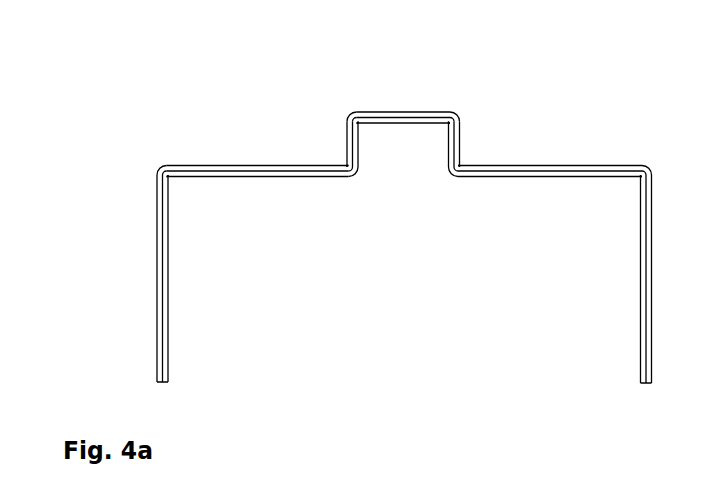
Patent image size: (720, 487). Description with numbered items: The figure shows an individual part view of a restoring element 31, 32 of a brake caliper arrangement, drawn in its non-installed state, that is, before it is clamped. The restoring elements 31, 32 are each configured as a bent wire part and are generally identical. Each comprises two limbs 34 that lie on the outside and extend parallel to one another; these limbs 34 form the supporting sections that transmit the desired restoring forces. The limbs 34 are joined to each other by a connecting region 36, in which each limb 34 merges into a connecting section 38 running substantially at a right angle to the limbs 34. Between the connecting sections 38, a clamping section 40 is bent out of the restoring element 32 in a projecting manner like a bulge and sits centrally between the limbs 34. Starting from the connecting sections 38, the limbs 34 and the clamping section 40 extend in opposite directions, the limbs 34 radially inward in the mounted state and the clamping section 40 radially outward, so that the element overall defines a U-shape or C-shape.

The restoring element 31 is at (145, 118).
The restoring element 32 is at (360, 197).
The limbs 34 is at (158, 228).
The connecting region 36 is at (297, 88).
The connecting section 38 is at (257, 168).
The clamping section 40 is at (385, 112).